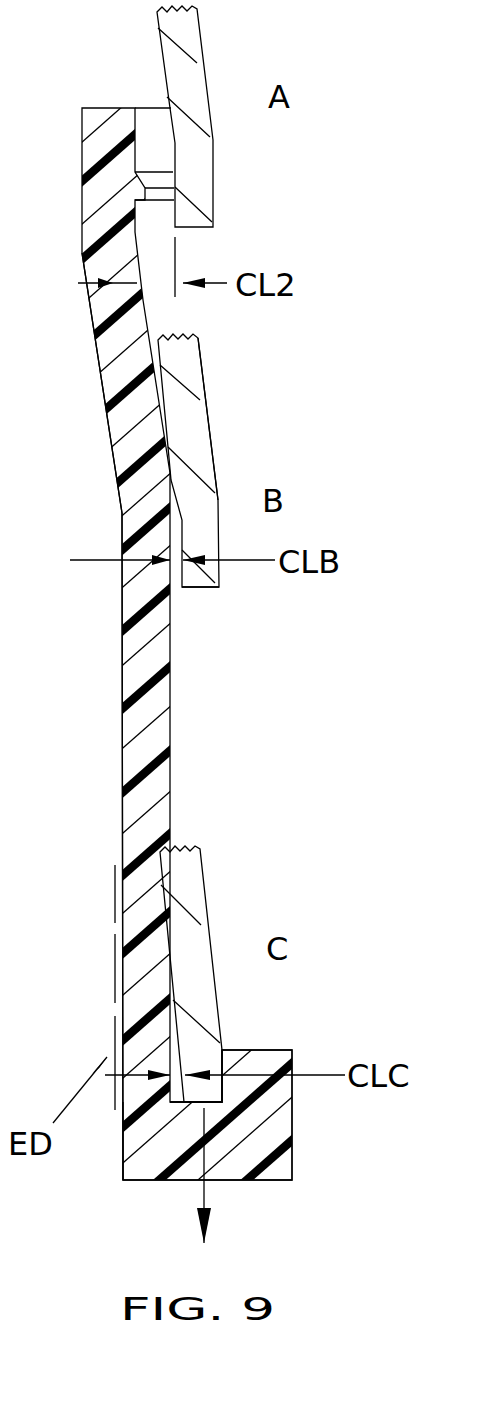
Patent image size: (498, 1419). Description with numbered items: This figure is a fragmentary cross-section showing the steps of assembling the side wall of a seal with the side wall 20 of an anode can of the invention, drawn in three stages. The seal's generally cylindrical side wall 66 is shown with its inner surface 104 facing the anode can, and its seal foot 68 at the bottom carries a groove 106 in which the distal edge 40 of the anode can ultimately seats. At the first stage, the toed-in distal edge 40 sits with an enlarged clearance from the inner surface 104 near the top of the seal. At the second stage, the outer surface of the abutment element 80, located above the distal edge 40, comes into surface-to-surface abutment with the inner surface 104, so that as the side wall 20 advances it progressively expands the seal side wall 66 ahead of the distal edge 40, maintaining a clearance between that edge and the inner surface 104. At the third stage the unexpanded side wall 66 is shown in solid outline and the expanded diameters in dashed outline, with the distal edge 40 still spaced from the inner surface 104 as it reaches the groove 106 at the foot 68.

The inner surface of side wall 104 is at (146, 321).
The side wall of the anode can 20 is at (205, 378).
The abutment element 80 is at (213, 450).
The distal edge 40 is at (190, 590).
The side wall of seal 66 is at (110, 693).
The groove 106 is at (226, 1050).
The seal foot 68 is at (293, 1145).